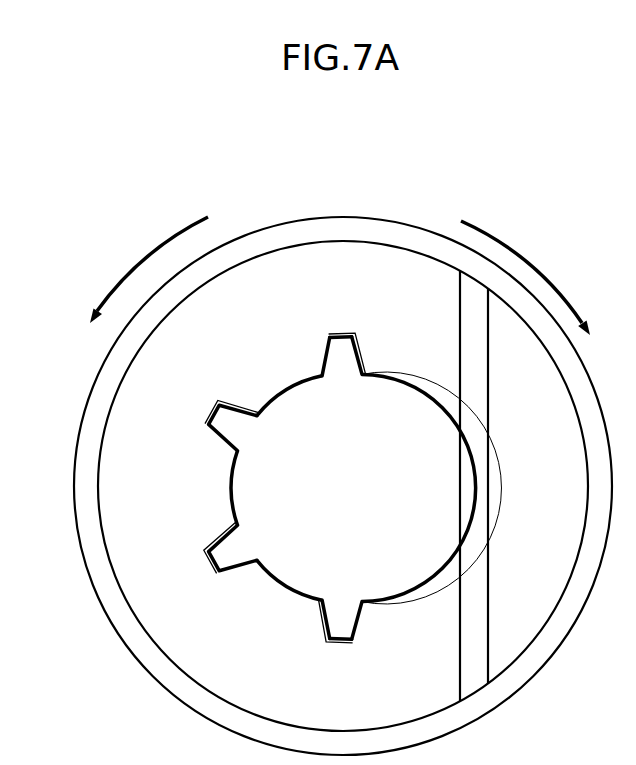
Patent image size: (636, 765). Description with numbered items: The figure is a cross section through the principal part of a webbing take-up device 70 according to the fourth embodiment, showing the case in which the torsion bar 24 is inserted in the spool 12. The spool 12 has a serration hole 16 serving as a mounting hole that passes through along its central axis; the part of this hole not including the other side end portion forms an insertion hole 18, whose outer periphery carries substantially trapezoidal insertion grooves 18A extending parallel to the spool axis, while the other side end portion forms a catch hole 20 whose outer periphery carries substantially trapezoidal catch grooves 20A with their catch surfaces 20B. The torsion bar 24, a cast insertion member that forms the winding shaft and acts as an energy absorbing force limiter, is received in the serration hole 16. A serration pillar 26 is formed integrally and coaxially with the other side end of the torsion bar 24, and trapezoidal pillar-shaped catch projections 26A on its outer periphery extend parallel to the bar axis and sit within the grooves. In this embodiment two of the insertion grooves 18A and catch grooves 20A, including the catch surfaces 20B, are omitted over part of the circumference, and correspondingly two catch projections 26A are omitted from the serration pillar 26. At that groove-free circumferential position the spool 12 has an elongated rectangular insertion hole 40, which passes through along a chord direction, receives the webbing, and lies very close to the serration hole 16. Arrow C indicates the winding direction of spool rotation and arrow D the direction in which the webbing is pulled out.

The webbing take-up device 70 is at (229, 180).
The spool 12 is at (366, 207).
The serration hole 16 is at (289, 407).
The insertion hole 18 is at (231, 480).
The insertion groove 18A is at (208, 553).
The catch hole 20 is at (404, 390).
The catch groove 20A is at (220, 397).
The catch surface 20B is at (368, 344).
The torsion bar 24 is at (401, 603).
The serration pillar 26 is at (273, 578).
The catch projection 26A is at (341, 336).
The insertion hole 40 is at (543, 551).
The winding direction C is at (525, 258).
The pull-out direction D is at (143, 258).